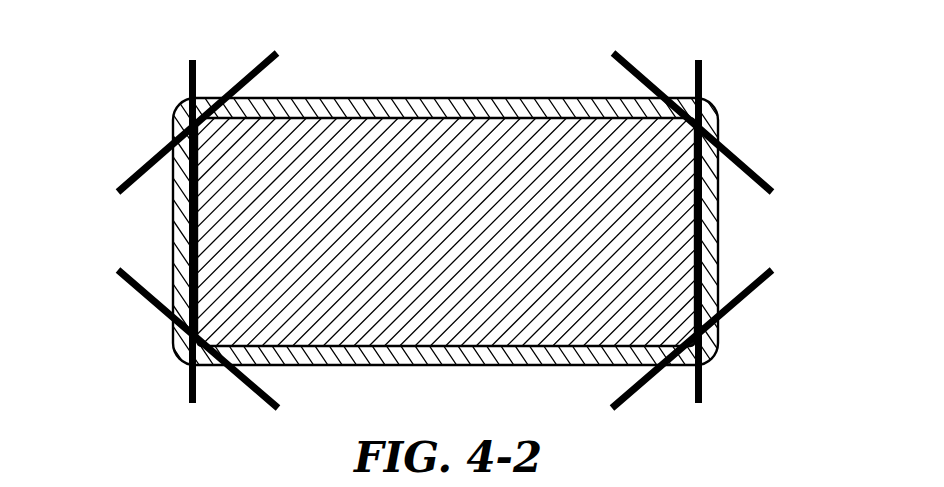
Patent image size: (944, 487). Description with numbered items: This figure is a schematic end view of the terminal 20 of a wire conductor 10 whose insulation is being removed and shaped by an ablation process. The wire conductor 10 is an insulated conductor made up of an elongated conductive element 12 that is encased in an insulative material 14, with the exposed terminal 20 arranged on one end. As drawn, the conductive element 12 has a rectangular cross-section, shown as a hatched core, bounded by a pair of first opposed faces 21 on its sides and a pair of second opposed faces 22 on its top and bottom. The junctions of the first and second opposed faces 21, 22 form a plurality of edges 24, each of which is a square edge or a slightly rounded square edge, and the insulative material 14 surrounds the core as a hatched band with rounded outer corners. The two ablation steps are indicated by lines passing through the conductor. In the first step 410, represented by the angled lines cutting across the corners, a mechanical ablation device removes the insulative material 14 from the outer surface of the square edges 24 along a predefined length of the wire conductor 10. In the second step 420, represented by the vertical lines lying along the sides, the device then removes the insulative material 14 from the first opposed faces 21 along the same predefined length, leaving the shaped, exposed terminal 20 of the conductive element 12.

The wire conductor 10 is at (459, 199).
The terminal 20 is at (459, 199).
The conductive element 12 is at (513, 135).
The insulative material 14 is at (425, 98).
The first opposed faces 21 is at (210, 228).
The second opposed faces 22 is at (551, 128).
The edges 24 is at (202, 122).
The step of removing insulative material from square edges 410 is at (157, 290).
The step of removing insulative material from first opposed faces 420 is at (700, 86).